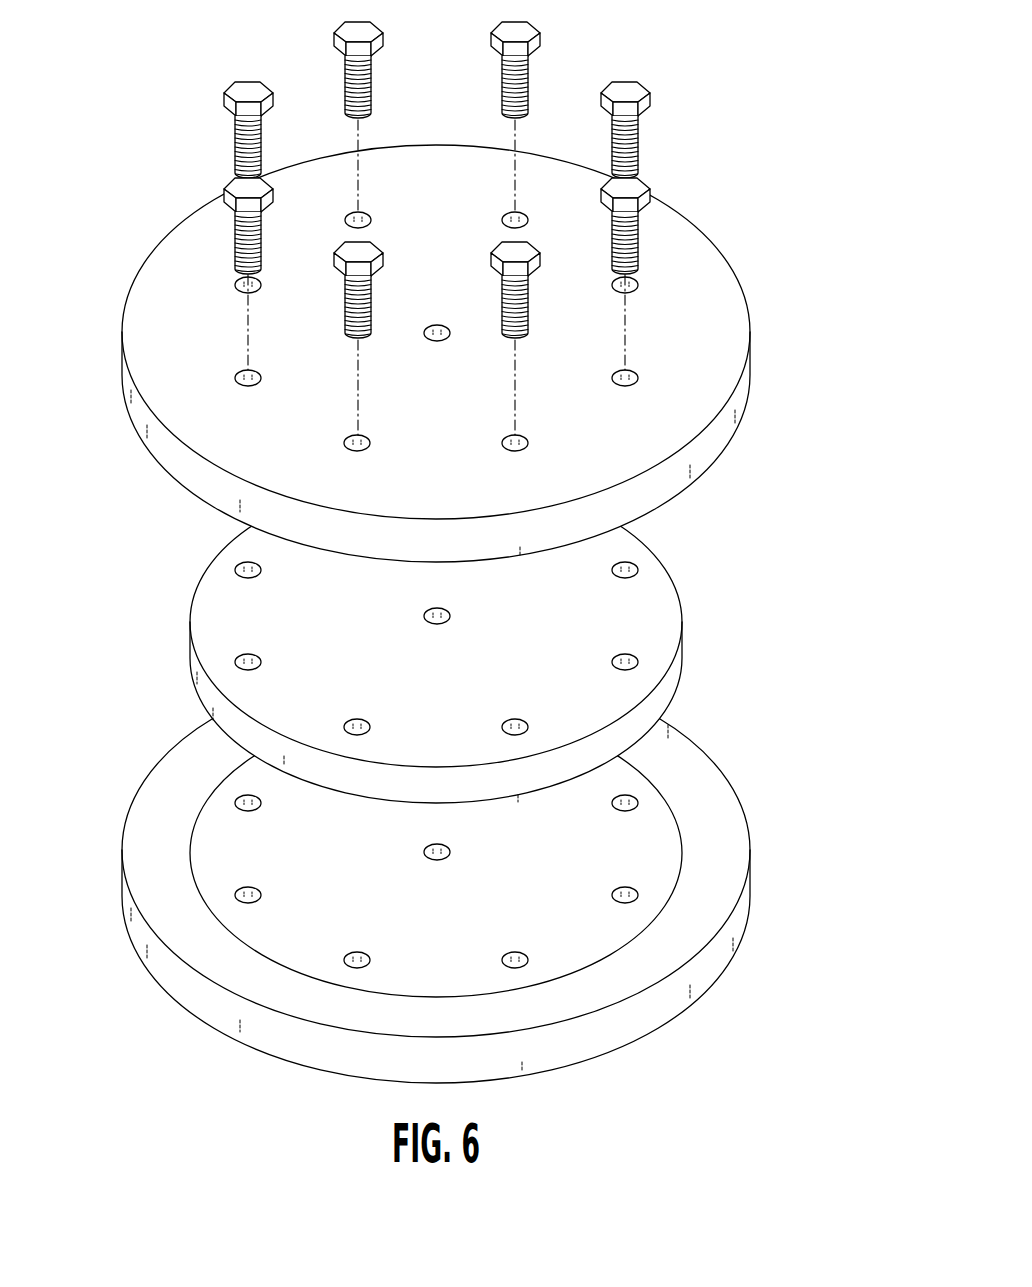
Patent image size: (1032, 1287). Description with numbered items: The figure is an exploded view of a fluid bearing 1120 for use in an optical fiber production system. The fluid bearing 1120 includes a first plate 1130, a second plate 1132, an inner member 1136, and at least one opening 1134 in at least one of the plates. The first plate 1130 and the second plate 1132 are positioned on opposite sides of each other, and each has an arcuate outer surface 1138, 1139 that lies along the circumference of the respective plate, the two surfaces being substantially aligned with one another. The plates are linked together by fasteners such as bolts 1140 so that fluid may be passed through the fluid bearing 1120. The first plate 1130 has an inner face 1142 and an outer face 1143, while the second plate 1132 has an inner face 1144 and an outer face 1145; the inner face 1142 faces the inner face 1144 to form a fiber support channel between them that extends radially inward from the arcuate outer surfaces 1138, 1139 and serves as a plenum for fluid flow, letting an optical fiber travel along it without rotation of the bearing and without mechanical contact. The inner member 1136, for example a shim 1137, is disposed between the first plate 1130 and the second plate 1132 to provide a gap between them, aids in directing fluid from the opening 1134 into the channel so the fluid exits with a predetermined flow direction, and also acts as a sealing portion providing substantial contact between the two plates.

The fluid bearing 1120 is at (853, 147).
The first plate 1130 is at (704, 234).
The second plate 1132 is at (754, 890).
The opening 1134 is at (437, 325).
The inner member 1136 is at (686, 614).
The shim 1137 is at (190, 652).
The arcuate outer surface 1138 is at (737, 420).
The arcuate outer surface 1139 is at (127, 917).
The bolts 1140 is at (540, 36).
The inner face 1142 is at (152, 455).
The outer face 1143 is at (168, 260).
The inner face 1144 is at (752, 843).
The outer face 1145 is at (642, 1042).